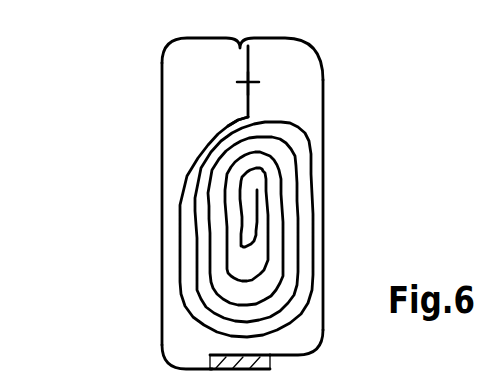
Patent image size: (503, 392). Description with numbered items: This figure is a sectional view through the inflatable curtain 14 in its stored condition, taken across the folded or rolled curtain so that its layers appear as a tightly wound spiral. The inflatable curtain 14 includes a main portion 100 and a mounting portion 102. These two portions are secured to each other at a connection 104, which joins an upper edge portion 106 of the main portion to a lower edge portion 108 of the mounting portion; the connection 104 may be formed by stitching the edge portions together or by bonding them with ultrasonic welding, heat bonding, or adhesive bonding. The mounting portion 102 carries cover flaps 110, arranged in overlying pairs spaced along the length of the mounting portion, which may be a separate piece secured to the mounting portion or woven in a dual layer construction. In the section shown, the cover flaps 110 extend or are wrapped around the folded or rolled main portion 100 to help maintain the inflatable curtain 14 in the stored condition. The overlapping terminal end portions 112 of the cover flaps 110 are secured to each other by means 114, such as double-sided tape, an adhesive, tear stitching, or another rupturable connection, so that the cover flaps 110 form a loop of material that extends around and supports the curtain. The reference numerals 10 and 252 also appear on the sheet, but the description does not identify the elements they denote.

The cable management device 10 is at (100, 56).
The inflatable curtain 14 is at (110, 84).
The main portion 100 is at (303, 136).
The mounting portion 102 is at (318, 62).
The connection 104 is at (251, 80).
The upper edge portion 106 is at (250, 104).
The lower edge portion 108 is at (238, 82).
The cover flaps 110 is at (161, 188).
The terminal end portions 112 is at (238, 367).
The means 114 is at (272, 361).
The connector 252 is at (130, 389).